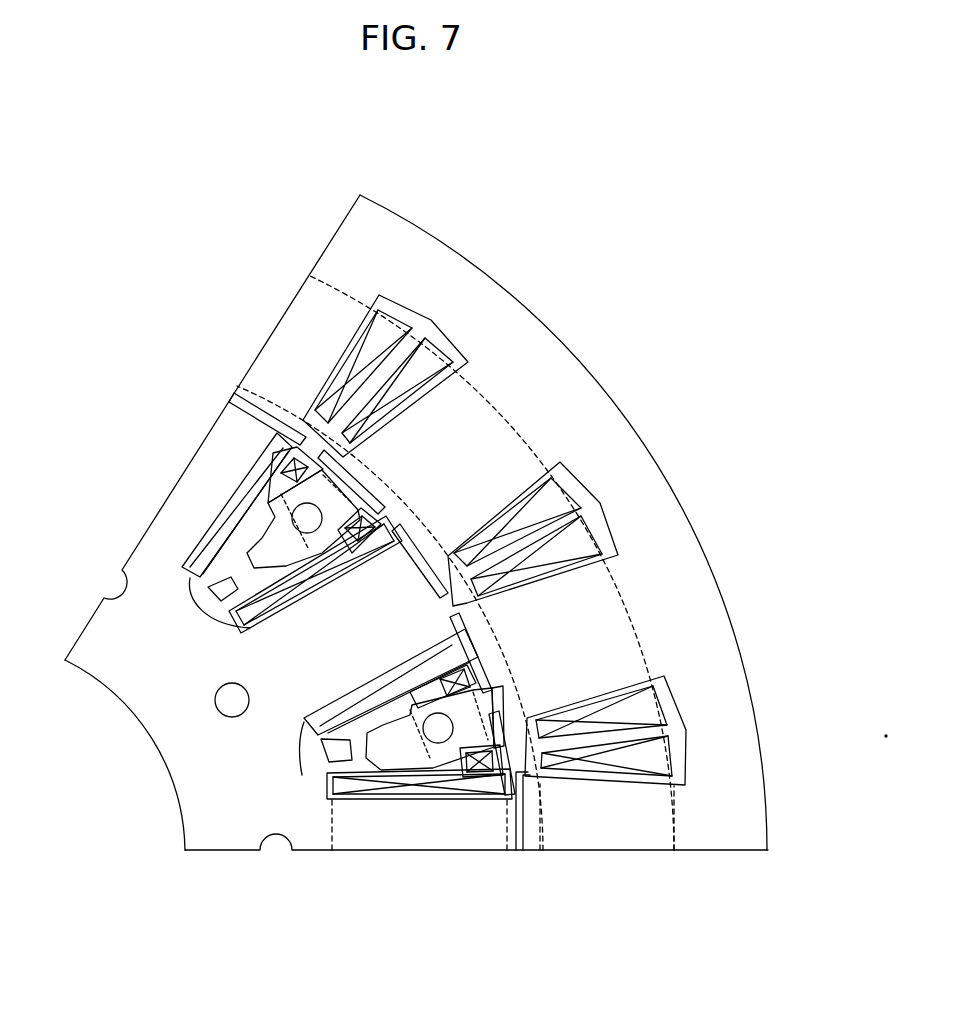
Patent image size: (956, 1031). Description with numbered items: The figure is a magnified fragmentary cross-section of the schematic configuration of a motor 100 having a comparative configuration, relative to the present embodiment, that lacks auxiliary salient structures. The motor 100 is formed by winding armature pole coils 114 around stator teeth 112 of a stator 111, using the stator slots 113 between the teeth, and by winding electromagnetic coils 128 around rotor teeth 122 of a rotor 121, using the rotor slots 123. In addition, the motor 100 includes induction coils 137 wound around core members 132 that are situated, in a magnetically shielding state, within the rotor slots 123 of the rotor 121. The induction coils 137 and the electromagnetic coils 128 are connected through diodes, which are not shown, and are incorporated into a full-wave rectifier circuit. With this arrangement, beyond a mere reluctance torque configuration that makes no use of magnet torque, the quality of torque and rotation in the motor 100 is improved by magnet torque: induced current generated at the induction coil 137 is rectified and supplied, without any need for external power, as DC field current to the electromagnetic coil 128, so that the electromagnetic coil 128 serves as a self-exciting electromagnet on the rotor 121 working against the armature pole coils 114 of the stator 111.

The motor 100 is at (703, 340).
The stator 111 is at (470, 280).
The stator teeth 112 is at (623, 838).
The stator slots 113 is at (682, 762).
The armature pole coils 114 is at (350, 352).
The rotor 121 is at (197, 790).
The rotor teeth 122 is at (458, 835).
The rotor slots 123 is at (322, 773).
The electromagnetic coils 128 is at (240, 500).
The core members 132 is at (399, 748).
The induction coils 137 is at (293, 470).